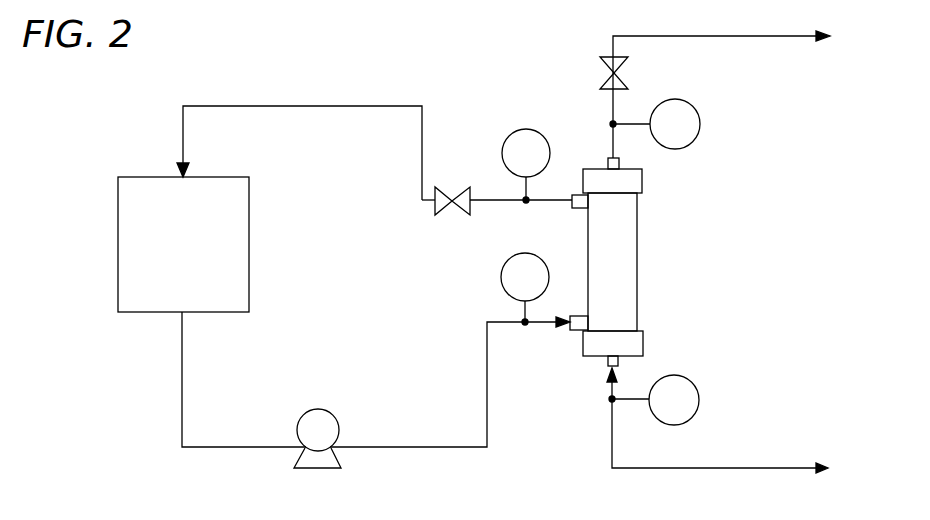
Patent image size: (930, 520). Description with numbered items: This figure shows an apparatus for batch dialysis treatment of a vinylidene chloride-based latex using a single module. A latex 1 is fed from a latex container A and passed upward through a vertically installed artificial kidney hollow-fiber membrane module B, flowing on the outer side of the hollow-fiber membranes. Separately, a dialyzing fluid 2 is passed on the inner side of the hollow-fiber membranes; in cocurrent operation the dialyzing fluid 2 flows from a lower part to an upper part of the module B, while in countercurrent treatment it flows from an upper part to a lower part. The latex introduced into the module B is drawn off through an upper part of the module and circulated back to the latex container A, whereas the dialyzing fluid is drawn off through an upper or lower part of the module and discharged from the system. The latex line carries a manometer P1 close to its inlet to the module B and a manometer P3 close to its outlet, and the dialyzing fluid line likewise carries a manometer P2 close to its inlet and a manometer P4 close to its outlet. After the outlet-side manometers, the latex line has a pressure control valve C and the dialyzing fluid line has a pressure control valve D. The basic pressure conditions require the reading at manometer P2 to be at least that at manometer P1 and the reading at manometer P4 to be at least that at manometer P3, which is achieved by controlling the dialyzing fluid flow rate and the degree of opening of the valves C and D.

The latex container A is at (183, 244).
The artificial kidney hollow-fiber membrane module B is at (606, 262).
The pressure control valve C is at (461, 193).
The pressure control valve D is at (627, 73).
The manometer P1 is at (507, 289).
The manometer P2 is at (671, 400).
The manometer P3 is at (526, 149).
The manometer P4 is at (673, 124).
The latex 1 is at (376, 390).
The dialyzing fluid 2 is at (735, 425).